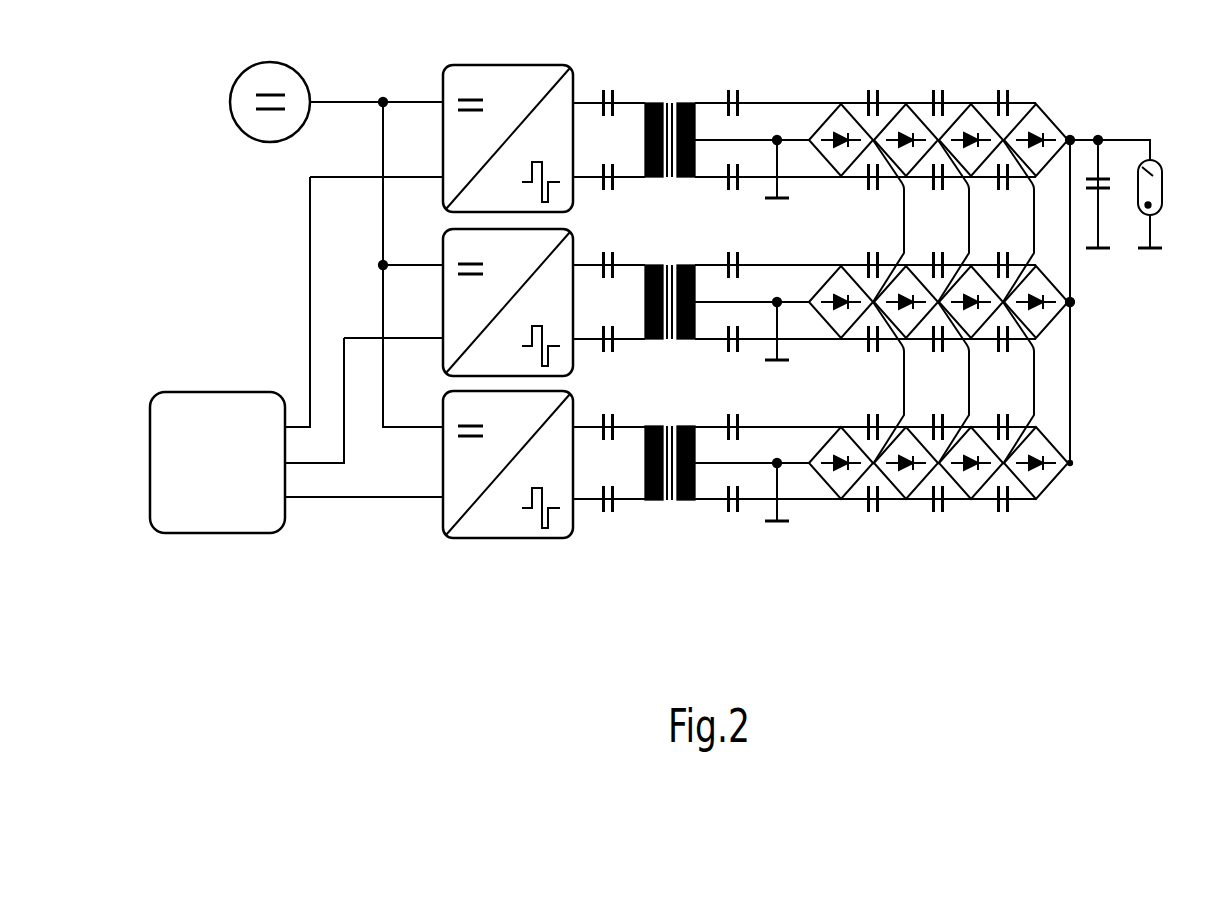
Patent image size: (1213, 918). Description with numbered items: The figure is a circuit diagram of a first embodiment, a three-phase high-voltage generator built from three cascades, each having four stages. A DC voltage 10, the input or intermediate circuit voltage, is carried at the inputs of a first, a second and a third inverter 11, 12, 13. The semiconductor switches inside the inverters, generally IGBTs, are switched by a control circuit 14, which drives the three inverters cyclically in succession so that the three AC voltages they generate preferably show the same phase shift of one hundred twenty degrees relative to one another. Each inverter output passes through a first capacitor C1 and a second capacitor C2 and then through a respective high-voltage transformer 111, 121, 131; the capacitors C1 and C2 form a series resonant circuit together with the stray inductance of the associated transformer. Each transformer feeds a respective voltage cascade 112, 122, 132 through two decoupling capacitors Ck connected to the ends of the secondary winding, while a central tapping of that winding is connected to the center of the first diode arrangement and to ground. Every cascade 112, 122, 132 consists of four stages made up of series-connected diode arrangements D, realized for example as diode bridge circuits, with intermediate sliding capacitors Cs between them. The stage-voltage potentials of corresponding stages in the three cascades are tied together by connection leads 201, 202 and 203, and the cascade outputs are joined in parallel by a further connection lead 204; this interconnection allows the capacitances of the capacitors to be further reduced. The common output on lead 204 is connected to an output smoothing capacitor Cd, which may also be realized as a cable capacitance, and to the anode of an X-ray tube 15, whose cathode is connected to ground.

The DC voltage 10 is at (270, 121).
The first inverter 11 is at (492, 138).
The second inverter 12 is at (491, 302).
The third inverter 13 is at (491, 464).
The control circuit 14 is at (217, 446).
The X-ray tube 15 is at (1164, 204).
The first transformer 111 is at (670, 124).
The second transformer 121 is at (670, 287).
The third transformer 131 is at (670, 447).
The first voltage cascade 112 is at (1090, 126).
The second voltage cascade 122 is at (1087, 304).
The third voltage cascade 132 is at (1088, 465).
The connection lead 201 is at (905, 383).
The connection lead 202 is at (970, 383).
The connection lead 203 is at (1035, 383).
The connection lead 204 is at (1089, 301).
The first capacitor C1 is at (606, 252).
The second capacitor C2 is at (607, 353).
The decoupling capacitor Ck is at (733, 307).
The sliding capacitor Cs is at (938, 304).
The output smoothing capacitor Cd is at (1108, 194).
The diode arrangement D is at (938, 303).